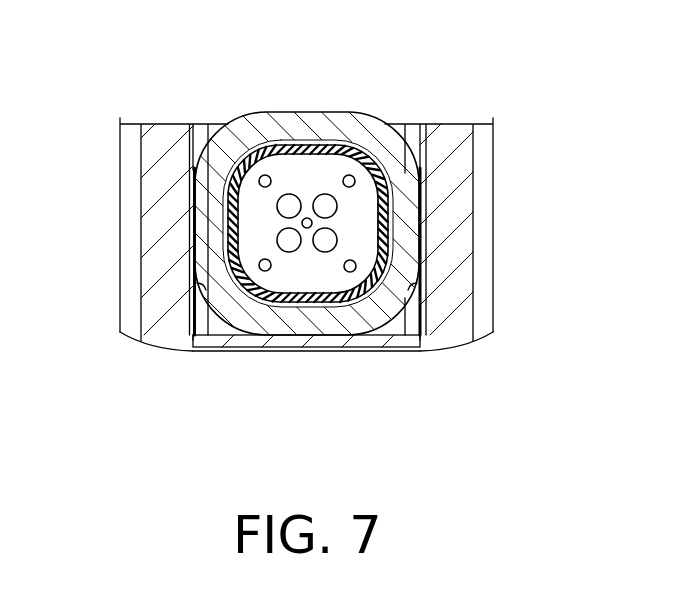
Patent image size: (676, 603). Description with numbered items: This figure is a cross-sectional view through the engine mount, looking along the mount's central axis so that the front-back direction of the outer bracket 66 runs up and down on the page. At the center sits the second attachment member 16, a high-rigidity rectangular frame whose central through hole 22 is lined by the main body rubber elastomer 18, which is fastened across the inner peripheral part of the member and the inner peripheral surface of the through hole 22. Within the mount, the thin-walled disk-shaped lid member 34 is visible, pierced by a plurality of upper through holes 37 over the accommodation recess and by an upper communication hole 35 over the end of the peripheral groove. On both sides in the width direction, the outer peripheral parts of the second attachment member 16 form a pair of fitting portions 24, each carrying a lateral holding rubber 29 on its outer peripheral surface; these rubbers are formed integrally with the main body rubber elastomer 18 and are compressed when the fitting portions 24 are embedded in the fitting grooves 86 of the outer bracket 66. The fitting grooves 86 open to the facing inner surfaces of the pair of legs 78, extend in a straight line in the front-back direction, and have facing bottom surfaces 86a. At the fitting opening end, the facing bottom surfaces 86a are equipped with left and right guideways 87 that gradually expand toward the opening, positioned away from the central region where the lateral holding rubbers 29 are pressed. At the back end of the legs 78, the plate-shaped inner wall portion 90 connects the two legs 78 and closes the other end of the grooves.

The second attachment member 16 is at (280, 125).
The main body rubber elastomer 18 is at (313, 300).
The through hole 22 is at (257, 285).
The fitting portion 24 is at (220, 198).
The lateral holding rubber 29 is at (195, 237).
The lid member 34 is at (300, 150).
The upper communication hole 35 is at (357, 167).
The upper through holes 37 is at (263, 172).
The outer bracket 66 is at (165, 317).
The leg 78 is at (162, 217).
The fitting groove 86 is at (194, 334).
The facing bottom surface 86a is at (200, 282).
The guideway 87 is at (192, 160).
The inner wall portion 90 is at (390, 347).